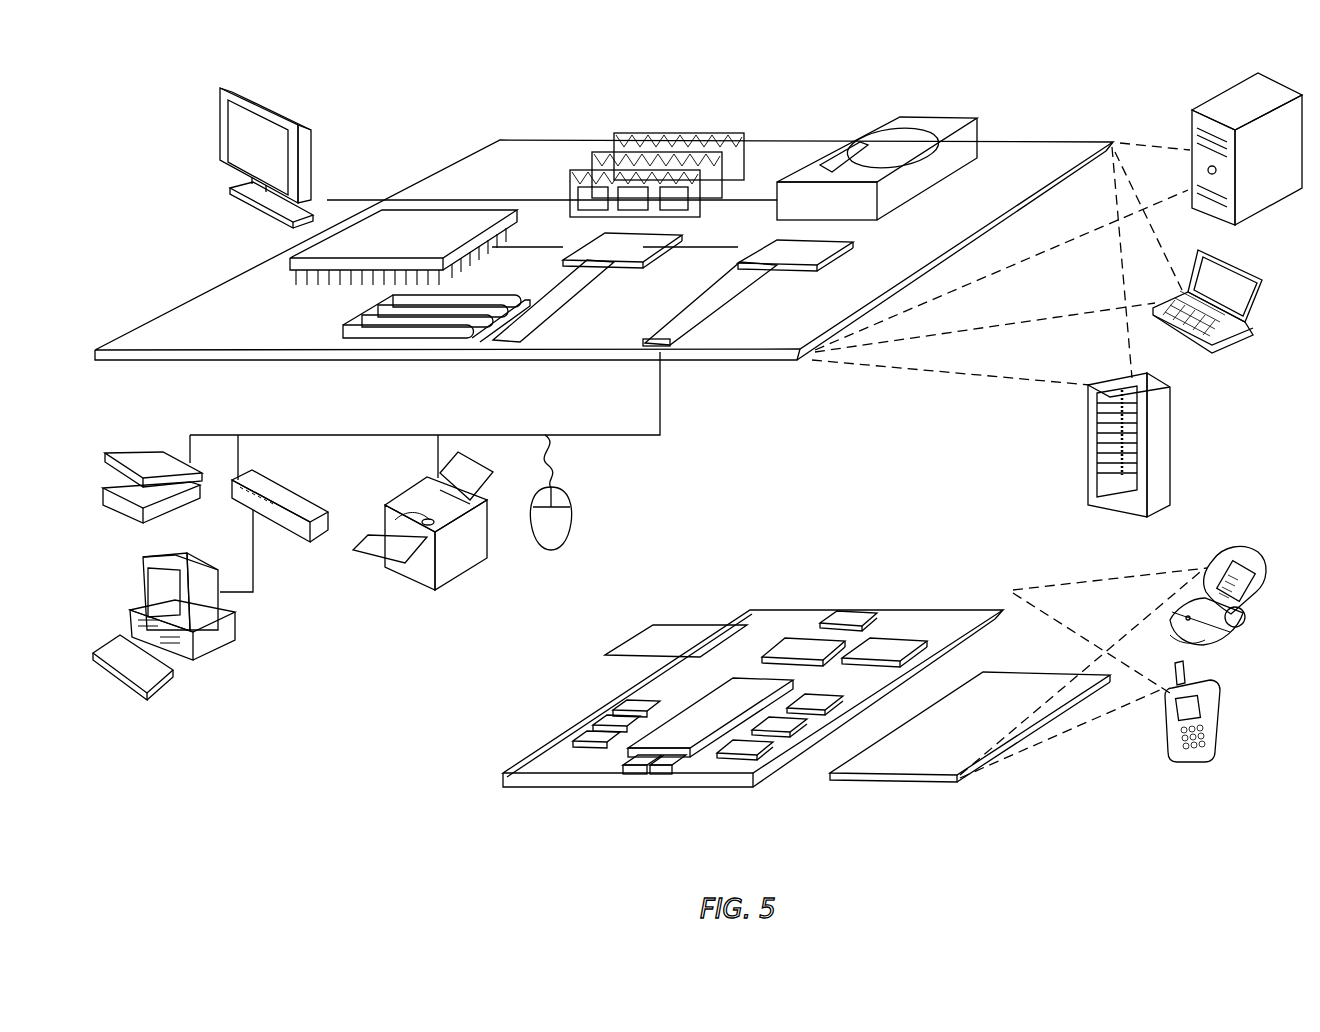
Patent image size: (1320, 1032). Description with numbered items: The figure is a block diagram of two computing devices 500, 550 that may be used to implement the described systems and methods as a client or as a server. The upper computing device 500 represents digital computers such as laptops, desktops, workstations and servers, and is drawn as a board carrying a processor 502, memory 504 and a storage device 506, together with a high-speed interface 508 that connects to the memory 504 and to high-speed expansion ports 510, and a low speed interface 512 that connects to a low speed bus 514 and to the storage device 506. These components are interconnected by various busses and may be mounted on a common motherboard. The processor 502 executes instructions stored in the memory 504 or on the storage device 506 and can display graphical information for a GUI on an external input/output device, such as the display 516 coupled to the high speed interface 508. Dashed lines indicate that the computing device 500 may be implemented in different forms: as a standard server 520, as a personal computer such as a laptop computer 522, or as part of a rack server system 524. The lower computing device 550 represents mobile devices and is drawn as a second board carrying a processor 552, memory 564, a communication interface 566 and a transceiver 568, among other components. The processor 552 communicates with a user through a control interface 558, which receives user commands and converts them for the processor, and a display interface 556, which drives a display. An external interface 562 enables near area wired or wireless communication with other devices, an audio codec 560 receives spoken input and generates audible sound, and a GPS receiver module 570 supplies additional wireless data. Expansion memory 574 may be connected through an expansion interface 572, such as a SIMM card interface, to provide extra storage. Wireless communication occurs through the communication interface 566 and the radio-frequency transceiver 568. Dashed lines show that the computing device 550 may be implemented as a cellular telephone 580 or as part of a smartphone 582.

The computing device 500 is at (416, 108).
The processor 502 is at (290, 262).
The memory 504 is at (636, 132).
The storage device 506 is at (870, 133).
The high-speed interface 508 is at (570, 236).
The high-speed expansion ports 510 is at (345, 322).
The low speed interface 512 is at (777, 248).
The low speed bus 514 is at (703, 348).
The display 516 is at (222, 90).
The standard server 520 is at (1187, 128).
The laptop computer 522 is at (1262, 278).
The rack server system 524 is at (1088, 473).
The computing device 550 is at (476, 784).
The processor 552 is at (683, 740).
The display interface 556 is at (760, 780).
The control interface 558 is at (797, 750).
The audio codec 560 is at (823, 740).
The external interface 562 is at (645, 777).
The memory 564 is at (590, 735).
The communication interface 566 is at (805, 648).
The transceiver 568 is at (885, 648).
The GPS receiver module 570 is at (850, 615).
The expansion interface 572 is at (728, 622).
The expansion memory 574 is at (655, 623).
The cellular telephone 580 is at (1222, 565).
The smartphone 582 is at (1165, 720).